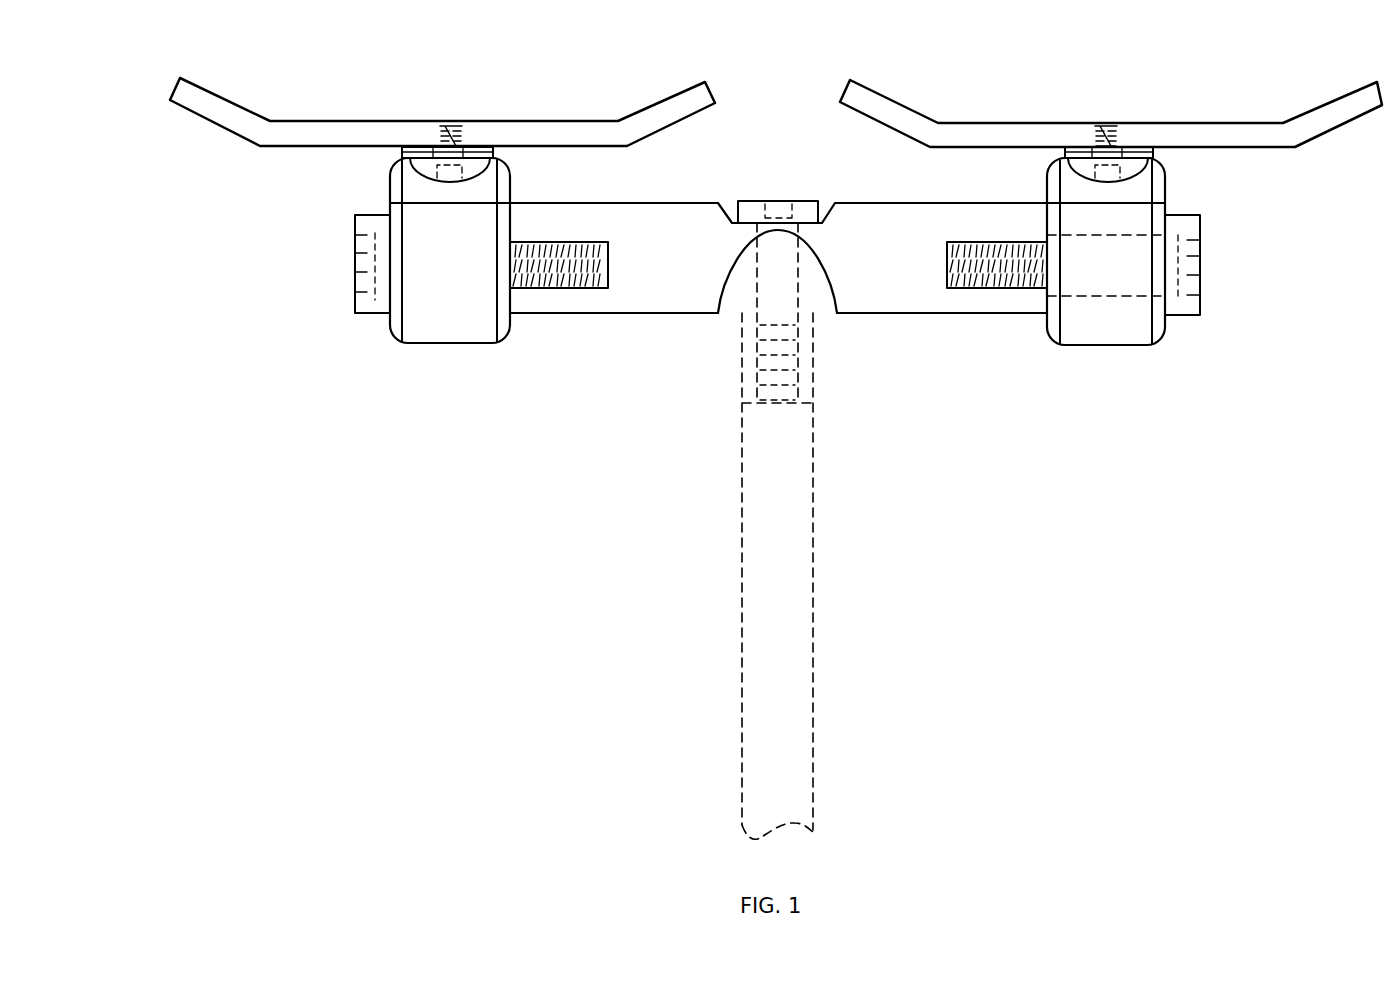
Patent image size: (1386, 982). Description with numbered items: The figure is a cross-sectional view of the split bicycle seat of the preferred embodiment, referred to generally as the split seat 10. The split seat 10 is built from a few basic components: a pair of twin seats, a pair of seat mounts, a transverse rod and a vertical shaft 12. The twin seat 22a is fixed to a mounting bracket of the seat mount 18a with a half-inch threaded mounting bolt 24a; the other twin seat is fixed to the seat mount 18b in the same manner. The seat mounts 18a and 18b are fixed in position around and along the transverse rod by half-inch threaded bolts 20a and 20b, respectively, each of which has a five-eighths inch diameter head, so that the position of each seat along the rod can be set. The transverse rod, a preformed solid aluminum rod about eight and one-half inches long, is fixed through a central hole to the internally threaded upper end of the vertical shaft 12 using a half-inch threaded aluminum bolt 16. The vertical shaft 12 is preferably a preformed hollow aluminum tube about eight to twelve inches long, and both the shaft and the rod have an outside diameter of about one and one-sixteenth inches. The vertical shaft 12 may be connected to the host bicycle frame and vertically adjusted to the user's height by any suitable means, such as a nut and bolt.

The split seat 10 is at (332, 633).
The vertical shaft 12 is at (740, 575).
The bolt 16 is at (785, 202).
The seat mount 18a is at (410, 317).
The seat mount 18b is at (1140, 307).
The threaded bolt 20a is at (355, 243).
The threaded bolt 20b is at (1205, 248).
The twin seat 22a is at (356, 133).
The threaded mounting bolt 24a is at (455, 127).